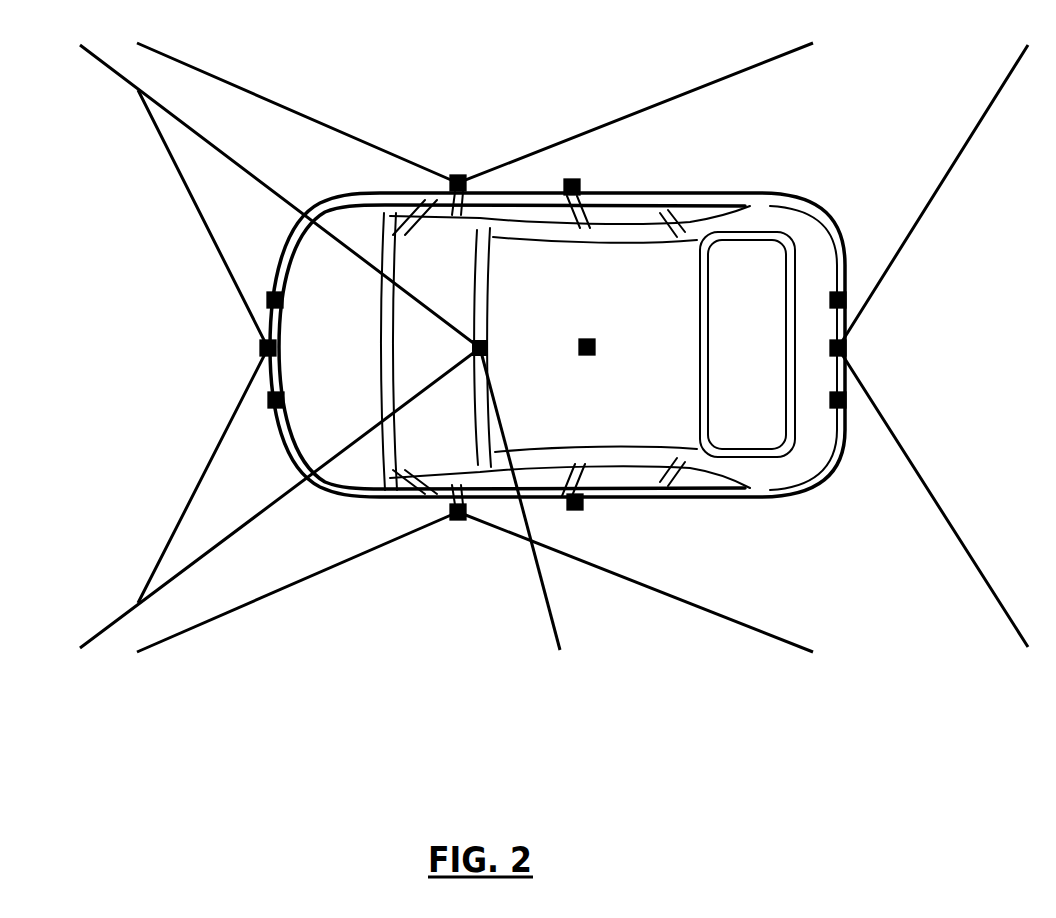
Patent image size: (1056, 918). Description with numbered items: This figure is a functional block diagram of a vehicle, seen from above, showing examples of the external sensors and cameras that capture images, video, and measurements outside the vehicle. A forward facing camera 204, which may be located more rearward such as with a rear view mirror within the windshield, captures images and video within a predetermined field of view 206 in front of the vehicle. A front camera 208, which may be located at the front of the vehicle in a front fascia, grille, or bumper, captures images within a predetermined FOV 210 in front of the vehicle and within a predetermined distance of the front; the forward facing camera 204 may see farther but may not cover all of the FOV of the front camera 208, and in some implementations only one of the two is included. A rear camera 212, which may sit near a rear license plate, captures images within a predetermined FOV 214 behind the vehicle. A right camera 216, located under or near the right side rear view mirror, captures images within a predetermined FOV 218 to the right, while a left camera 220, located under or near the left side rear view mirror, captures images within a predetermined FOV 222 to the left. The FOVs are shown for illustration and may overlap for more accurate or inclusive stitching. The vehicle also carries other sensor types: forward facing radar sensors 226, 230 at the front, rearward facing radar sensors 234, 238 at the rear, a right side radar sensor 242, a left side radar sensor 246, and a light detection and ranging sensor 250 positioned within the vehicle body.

The forward facing camera 204 is at (560, 650).
The predetermined field of view 206 is at (250, 175).
The front camera 208 is at (260, 348).
The predetermined FOV 210 is at (175, 182).
The rear camera 212 is at (846, 348).
The predetermined FOV 214 is at (942, 187).
The right camera 216 is at (458, 175).
The predetermined FOV 218 is at (227, 82).
The left camera 220 is at (458, 521).
The predetermined FOV 222 is at (588, 565).
The forward facing radar sensor 226 is at (268, 300).
The forward facing radar sensor 230 is at (268, 400).
The rearward facing radar sensor 234 is at (845, 300).
The rearward facing radar sensor 238 is at (846, 400).
The right side radar sensor 242 is at (572, 180).
The left side radar sensor 246 is at (578, 510).
The light detection and ranging (LIDAR) sensor 250 is at (587, 356).